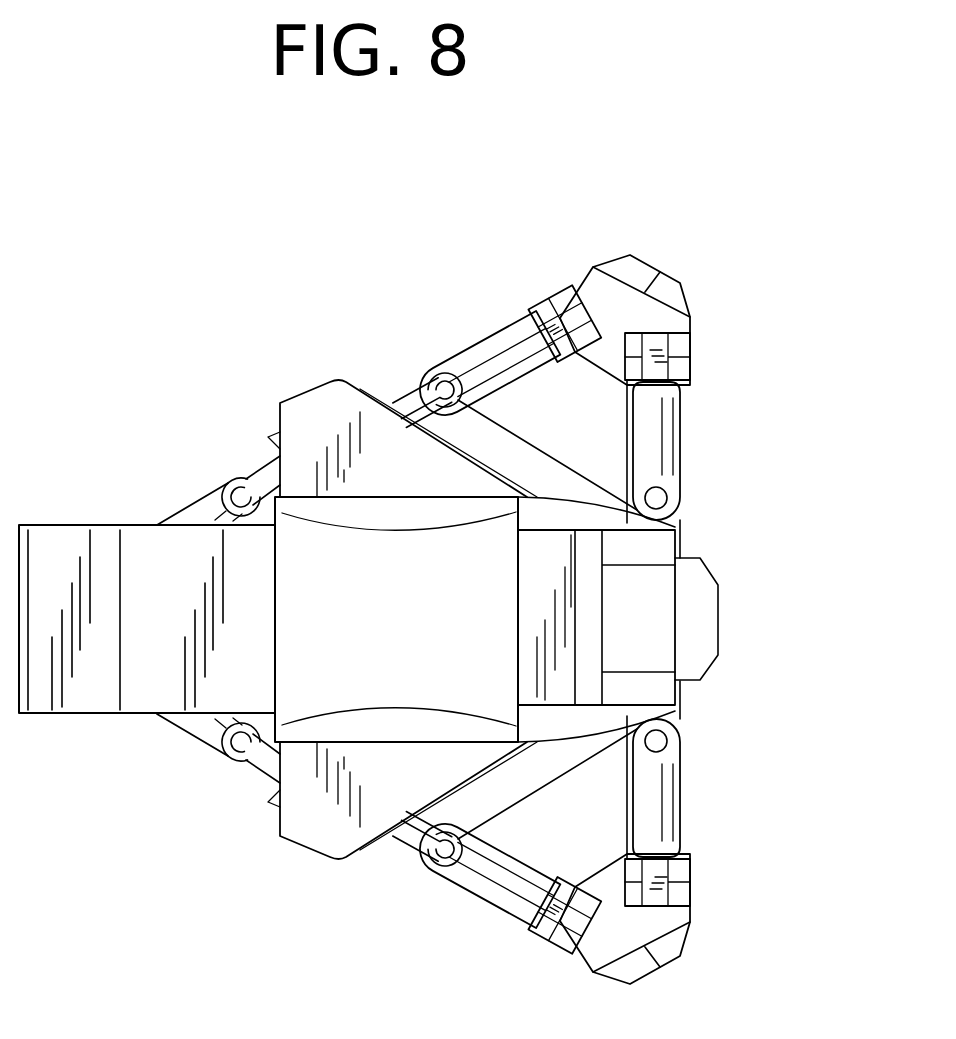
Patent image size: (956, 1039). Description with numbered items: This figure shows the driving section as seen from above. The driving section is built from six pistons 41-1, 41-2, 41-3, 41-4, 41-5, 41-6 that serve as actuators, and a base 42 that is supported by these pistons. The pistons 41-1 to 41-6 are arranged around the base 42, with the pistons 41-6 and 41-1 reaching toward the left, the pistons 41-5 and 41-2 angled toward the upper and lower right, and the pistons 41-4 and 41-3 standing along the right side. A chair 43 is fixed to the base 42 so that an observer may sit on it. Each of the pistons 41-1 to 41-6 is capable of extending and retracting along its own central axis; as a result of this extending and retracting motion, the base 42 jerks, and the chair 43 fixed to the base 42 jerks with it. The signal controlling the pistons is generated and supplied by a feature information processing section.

The piston 41-1 is at (192, 727).
The piston 41-2 is at (483, 875).
The piston 41-3 is at (657, 795).
The piston 41-4 is at (657, 443).
The piston 41-5 is at (470, 355).
The piston 41-6 is at (200, 507).
The base 42 is at (317, 812).
The chair 43 is at (413, 621).